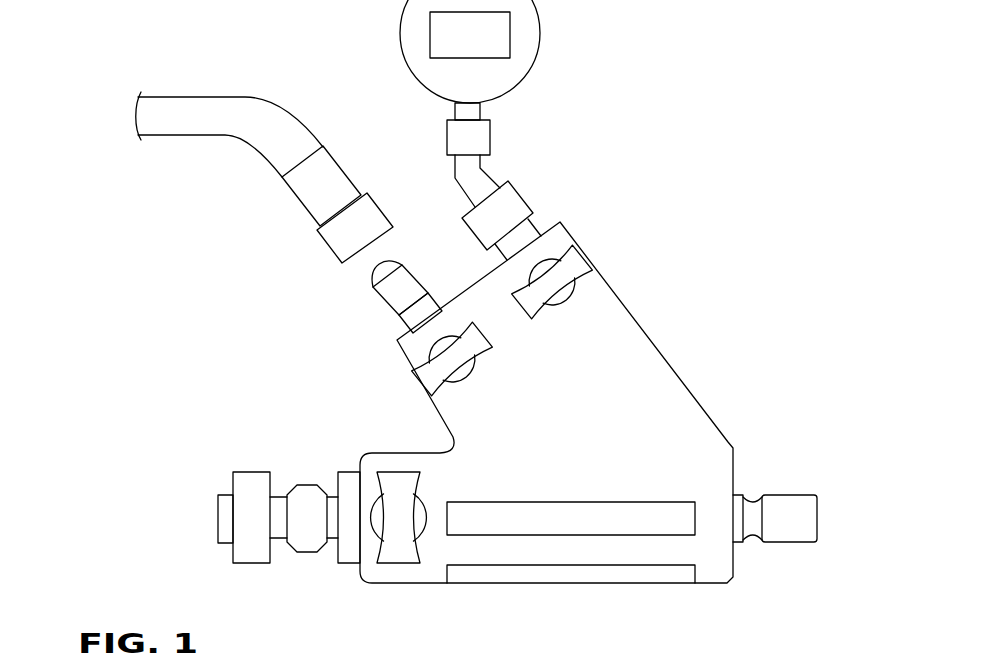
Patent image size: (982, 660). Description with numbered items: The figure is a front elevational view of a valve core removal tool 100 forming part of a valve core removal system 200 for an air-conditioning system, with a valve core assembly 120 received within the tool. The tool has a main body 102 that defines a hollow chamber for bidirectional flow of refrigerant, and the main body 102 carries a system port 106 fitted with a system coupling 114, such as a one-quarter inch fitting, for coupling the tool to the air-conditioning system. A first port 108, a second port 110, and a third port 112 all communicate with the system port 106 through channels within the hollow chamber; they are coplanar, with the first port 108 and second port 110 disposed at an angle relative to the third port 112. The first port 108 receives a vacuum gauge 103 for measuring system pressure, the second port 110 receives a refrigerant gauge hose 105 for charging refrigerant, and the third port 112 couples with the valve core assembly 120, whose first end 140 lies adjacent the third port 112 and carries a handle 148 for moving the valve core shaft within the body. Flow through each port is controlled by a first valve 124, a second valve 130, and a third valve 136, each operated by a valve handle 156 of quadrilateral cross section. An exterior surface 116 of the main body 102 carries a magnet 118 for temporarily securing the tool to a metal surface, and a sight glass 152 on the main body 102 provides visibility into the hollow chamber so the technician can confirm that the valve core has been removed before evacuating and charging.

The valve core removal tool 100 is at (737, 357).
The main body 102 is at (627, 320).
The vacuum gauge 103 is at (590, 51).
The refrigerant gauge hose 105 is at (249, 89).
The system port 106 is at (791, 508).
The first port 108 is at (548, 222).
The second port 110 is at (410, 312).
The third port 112 is at (350, 558).
The system coupling 114 is at (790, 536).
The exterior surface 116 is at (718, 584).
The magnet 118 is at (653, 573).
The valve core assembly 120 is at (281, 577).
The first valve 124 is at (555, 266).
The second valve 130 is at (428, 350).
The third valve 136 is at (415, 508).
The first end 140 is at (302, 468).
The handle 148 is at (242, 488).
The sight glass 152 is at (527, 518).
The valve handle 156 is at (577, 262).
The valve core removal system 200 is at (714, 165).